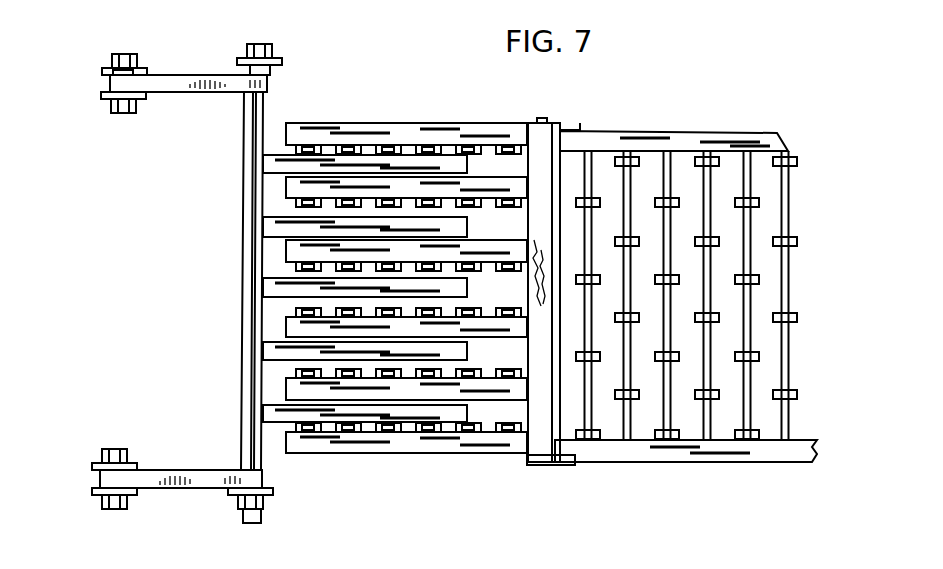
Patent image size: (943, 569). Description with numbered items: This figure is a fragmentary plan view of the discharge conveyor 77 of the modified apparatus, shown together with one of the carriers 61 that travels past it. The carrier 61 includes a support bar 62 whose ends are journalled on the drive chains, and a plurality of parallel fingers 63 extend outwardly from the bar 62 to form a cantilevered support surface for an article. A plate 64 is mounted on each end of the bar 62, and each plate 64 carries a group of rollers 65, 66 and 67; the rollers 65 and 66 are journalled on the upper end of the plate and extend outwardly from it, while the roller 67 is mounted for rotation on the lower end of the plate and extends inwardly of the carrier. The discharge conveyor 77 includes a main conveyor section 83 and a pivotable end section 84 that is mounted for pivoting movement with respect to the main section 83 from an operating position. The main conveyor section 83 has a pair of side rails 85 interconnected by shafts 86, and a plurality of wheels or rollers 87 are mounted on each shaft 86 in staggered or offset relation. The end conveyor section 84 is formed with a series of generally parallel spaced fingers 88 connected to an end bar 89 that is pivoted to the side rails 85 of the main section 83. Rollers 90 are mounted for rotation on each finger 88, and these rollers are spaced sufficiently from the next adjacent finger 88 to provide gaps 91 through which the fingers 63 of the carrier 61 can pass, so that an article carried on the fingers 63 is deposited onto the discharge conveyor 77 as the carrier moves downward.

The carrier 61 is at (188, 291).
The support bar 62 is at (244, 178).
The parallel fingers 63 is at (283, 410).
The plate 64 is at (188, 75).
The roller 65 is at (113, 56).
The roller 66 is at (265, 50).
The roller 67 is at (118, 115).
The discharge conveyor 77 is at (780, 130).
The main conveyor section 83 is at (612, 457).
The pivotable end section 84 is at (406, 286).
The side rails 85 is at (686, 288).
The shafts 86 is at (598, 160).
The rollers 87 is at (790, 390).
The fingers 88 is at (443, 188).
The end bar 89 is at (535, 447).
The rollers 90 is at (383, 190).
The gaps 91 is at (503, 218).